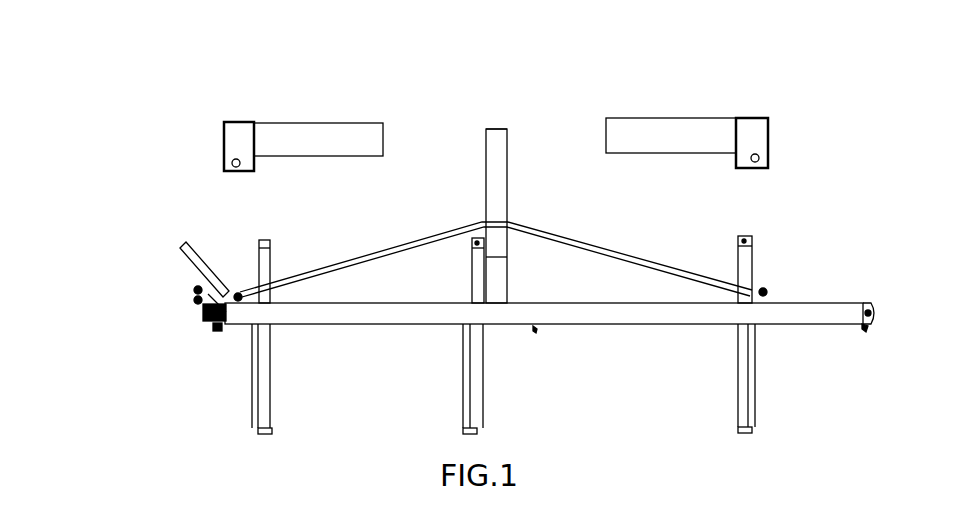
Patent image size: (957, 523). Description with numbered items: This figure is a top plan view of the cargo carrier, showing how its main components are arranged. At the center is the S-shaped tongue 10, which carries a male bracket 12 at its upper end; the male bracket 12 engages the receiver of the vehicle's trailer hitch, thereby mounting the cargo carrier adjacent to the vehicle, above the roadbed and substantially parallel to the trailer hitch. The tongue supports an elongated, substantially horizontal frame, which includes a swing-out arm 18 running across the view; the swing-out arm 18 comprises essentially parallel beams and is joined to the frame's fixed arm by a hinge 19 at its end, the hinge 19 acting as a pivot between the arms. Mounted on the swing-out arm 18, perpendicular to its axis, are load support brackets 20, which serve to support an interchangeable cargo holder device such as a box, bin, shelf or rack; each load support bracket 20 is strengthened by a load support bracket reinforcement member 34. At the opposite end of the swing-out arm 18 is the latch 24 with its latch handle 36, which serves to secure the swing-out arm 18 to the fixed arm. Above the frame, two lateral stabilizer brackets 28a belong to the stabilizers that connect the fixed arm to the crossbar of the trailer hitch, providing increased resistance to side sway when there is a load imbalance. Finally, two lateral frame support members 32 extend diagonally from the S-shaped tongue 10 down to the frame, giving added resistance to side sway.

The S-shaped tongue 10 is at (508, 174).
The male bracket 12 is at (494, 130).
The swing-out arm 18 is at (612, 310).
The swing-out arm hinge 19 is at (878, 308).
The load support bracket 20 is at (271, 257).
The latch 24 is at (184, 302).
The lateral stabilizer bracket 28a is at (300, 128).
The frame support member 32 is at (418, 240).
The load support bracket reinforcement member 34 is at (250, 393).
The latch handle 36 is at (210, 270).